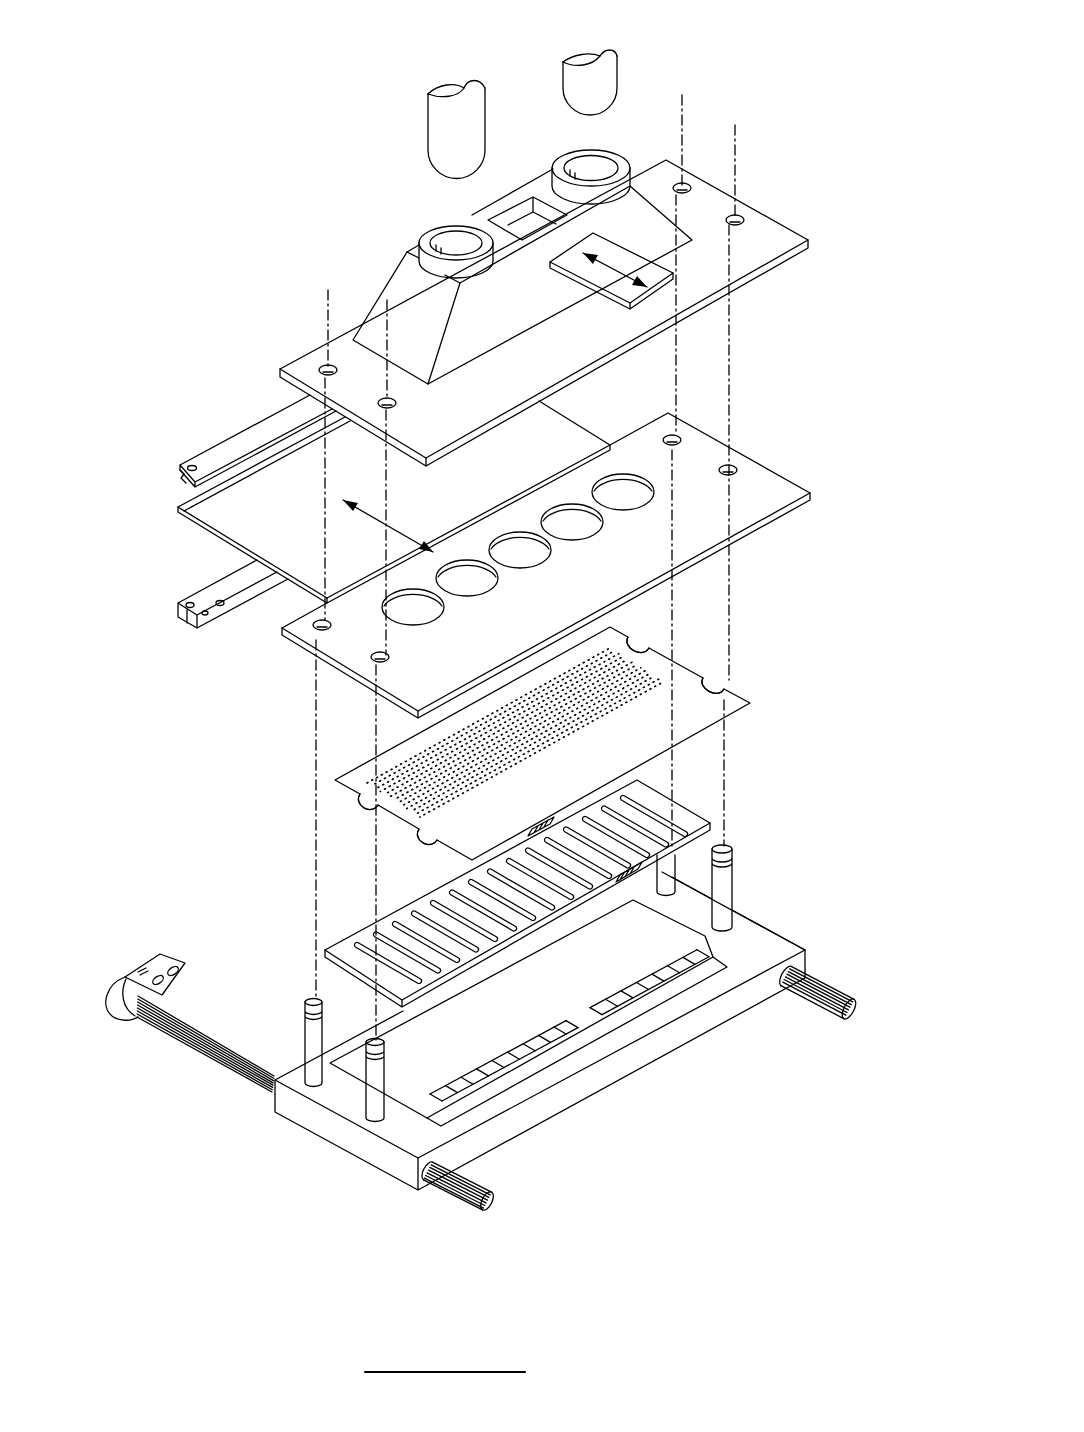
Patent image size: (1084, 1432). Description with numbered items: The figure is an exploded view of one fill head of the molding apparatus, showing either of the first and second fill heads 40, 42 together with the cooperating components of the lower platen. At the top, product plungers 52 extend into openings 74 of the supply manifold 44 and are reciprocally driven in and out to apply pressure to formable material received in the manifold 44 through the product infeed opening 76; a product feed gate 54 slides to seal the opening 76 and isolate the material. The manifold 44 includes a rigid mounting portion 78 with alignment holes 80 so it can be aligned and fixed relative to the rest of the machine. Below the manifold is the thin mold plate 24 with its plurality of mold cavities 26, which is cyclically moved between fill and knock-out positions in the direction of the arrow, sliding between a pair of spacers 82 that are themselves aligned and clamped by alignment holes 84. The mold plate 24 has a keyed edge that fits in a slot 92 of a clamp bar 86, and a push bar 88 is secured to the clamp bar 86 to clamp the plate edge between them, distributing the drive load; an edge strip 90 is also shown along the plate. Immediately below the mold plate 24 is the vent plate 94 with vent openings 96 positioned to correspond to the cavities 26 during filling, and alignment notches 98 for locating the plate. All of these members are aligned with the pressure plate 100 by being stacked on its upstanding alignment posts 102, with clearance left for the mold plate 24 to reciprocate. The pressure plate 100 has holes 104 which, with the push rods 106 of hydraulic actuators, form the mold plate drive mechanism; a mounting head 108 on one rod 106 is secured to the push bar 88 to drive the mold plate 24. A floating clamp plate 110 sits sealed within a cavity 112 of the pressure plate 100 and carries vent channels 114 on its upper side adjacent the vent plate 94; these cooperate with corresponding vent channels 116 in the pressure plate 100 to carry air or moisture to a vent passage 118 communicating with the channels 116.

The mold plate 24 is at (752, 540).
The mold cavities 26 is at (577, 503).
The first fill head 40 is at (491, 697).
The second fill head 42 is at (302, 206).
The supply manifold 44 is at (378, 277).
The product plungers 52 is at (437, 113).
The product feed gate 54 is at (669, 276).
The openings 74 is at (556, 161).
The product infeed opening 76 is at (514, 217).
The mounting portion 78 is at (810, 239).
The alignment holes 80 is at (677, 188).
The spacers 82 is at (786, 478).
The alignment holes 84 is at (672, 440).
The clamp bar 86 is at (187, 466).
The push bar 88 is at (183, 612).
The edge strip 90 is at (178, 508).
The slot 92 is at (177, 476).
The vent plate 94 is at (712, 709).
The vent openings 96 is at (545, 756).
The alignment notches 98 is at (367, 806).
The pressure plate 100 is at (735, 942).
The alignment posts 102 is at (314, 1100).
The holes 104 is at (786, 980).
The push rods 106 is at (840, 988).
The mounting head 108 is at (130, 968).
The floating clamp plate 110 is at (323, 946).
The cavity 112 is at (440, 1057).
The vent channels 114 is at (540, 905).
The vent channels 116 is at (552, 1028).
The vent passage 118 is at (612, 1023).